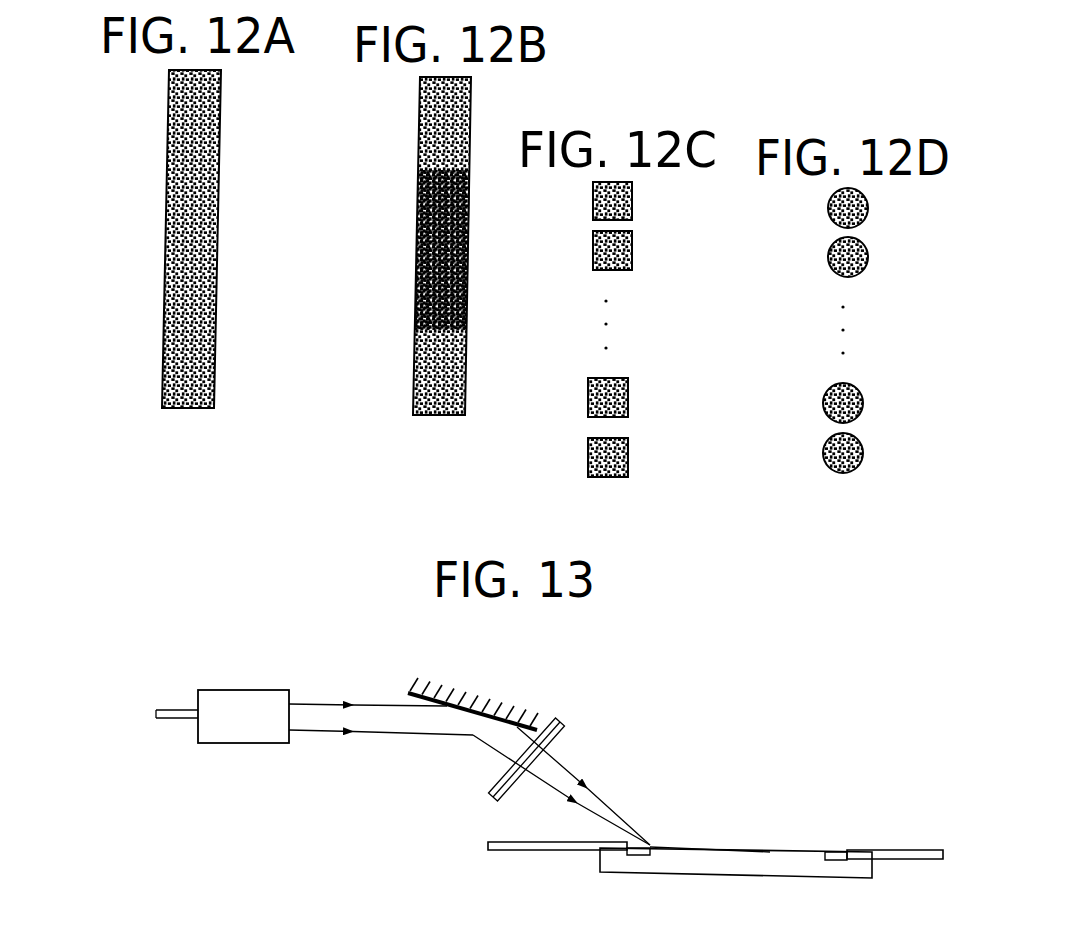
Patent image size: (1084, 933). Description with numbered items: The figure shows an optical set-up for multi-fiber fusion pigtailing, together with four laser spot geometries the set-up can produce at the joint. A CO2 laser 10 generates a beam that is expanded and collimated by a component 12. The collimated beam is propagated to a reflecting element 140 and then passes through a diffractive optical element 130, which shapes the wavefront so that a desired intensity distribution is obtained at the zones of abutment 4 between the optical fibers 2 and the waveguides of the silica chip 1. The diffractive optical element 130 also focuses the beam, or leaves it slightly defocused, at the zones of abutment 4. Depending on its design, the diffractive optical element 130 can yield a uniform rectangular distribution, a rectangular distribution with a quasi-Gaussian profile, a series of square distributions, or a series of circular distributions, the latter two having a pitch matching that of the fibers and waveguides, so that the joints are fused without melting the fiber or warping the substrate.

The CO2 laser 10 is at (145, 725).
The component 12 is at (252, 748).
The reflecting element 140 is at (492, 688).
The diffractive optical element 130 is at (560, 738).
The zone of abutment 4 is at (652, 840).
The optical fiber 2 is at (538, 862).
The silica chip 1 is at (723, 878).